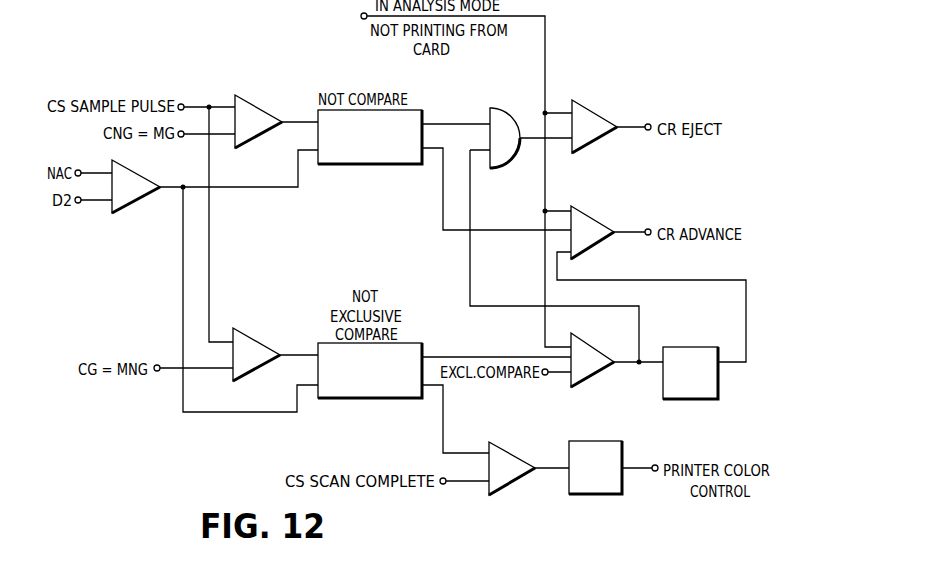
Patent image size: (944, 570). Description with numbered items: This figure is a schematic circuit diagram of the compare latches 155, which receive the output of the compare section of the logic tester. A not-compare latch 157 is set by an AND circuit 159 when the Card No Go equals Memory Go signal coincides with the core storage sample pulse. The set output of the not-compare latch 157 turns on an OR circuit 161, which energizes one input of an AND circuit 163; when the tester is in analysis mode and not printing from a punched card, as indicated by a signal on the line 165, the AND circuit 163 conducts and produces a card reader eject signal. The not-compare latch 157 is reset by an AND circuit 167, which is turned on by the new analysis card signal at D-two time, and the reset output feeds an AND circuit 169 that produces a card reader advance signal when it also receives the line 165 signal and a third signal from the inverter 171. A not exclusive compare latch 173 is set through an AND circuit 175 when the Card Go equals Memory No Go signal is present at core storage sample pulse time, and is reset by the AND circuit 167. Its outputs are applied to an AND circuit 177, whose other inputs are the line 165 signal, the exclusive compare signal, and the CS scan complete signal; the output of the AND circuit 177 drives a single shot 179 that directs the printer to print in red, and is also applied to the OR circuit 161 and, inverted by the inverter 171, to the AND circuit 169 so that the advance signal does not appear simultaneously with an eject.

The compare latches 155 is at (606, 37).
The not-compare latch 157 is at (425, 112).
The AND circuit 159 is at (258, 105).
The OR circuit 161 is at (505, 115).
The AND circuit 163 is at (590, 110).
The line 165 is at (548, 17).
The AND circuit 167 is at (148, 175).
The AND circuit 169 is at (588, 216).
The inverter 171 is at (695, 347).
The not exclusive compare latch 173 is at (425, 345).
The AND circuit 175 is at (258, 340).
The AND circuit 177 is at (588, 343).
The single shot 179 is at (623, 443).